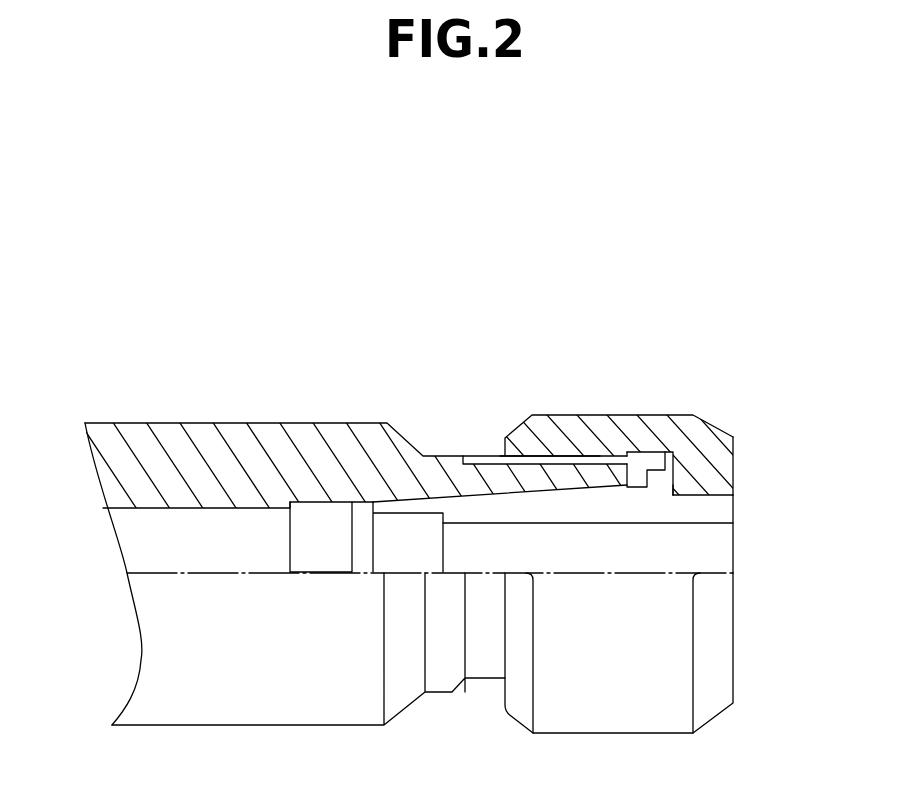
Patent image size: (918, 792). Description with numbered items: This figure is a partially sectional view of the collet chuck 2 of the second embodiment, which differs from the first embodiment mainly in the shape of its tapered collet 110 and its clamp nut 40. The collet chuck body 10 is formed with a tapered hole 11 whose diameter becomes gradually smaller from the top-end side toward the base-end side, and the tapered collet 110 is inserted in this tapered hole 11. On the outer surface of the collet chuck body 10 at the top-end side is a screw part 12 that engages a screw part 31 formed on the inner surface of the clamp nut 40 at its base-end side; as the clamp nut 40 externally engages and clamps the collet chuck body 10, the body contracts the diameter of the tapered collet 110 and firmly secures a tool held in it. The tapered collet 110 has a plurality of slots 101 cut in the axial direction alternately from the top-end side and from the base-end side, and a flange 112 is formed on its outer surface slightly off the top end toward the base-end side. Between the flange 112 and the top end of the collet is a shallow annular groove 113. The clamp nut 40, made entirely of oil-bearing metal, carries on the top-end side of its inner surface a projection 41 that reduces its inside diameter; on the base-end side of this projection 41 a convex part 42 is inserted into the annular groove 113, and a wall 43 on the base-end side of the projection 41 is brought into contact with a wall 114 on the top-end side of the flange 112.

The collet chuck 2 is at (708, 179).
The collet chuck body 10 is at (253, 443).
The slots 101 is at (495, 507).
The tapered hole 11 is at (568, 486).
The screw part 12 is at (522, 456).
The screw part 31 is at (550, 466).
The clamp nut 40 is at (607, 415).
The projection 41 is at (710, 495).
The convex part 42 is at (708, 470).
The wall 43 is at (650, 452).
The tapered collet 110 is at (722, 508).
The flange 112 is at (651, 464).
The annular groove 113 is at (738, 455).
The wall 114 is at (660, 487).